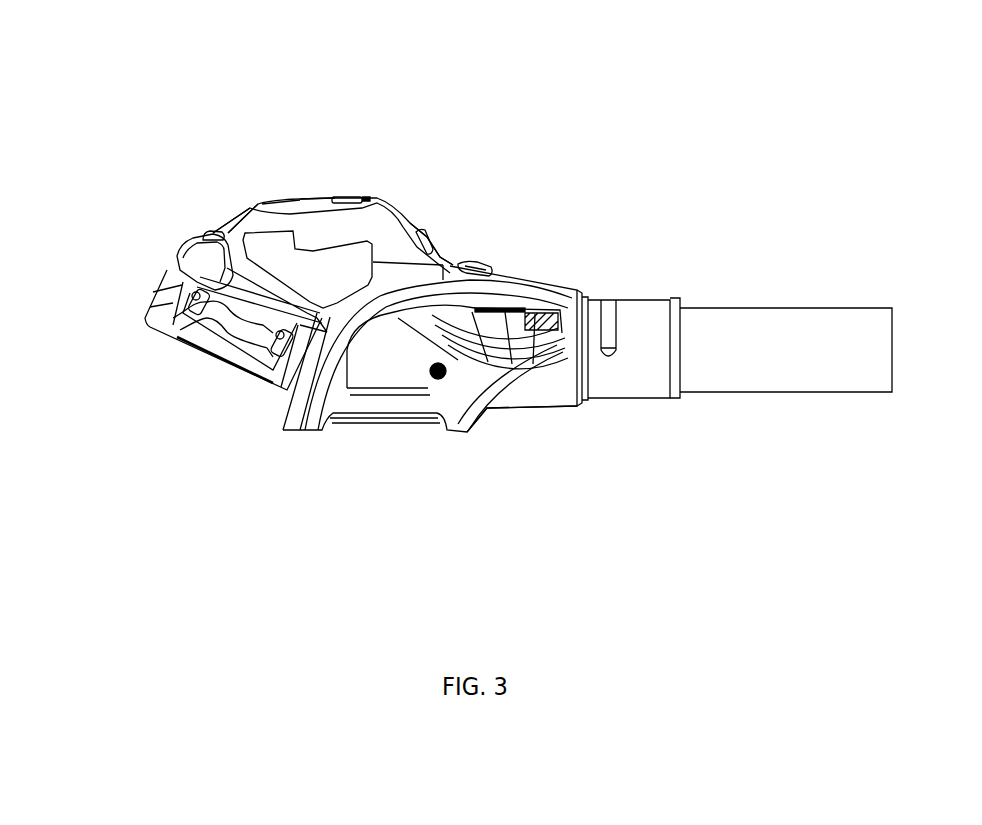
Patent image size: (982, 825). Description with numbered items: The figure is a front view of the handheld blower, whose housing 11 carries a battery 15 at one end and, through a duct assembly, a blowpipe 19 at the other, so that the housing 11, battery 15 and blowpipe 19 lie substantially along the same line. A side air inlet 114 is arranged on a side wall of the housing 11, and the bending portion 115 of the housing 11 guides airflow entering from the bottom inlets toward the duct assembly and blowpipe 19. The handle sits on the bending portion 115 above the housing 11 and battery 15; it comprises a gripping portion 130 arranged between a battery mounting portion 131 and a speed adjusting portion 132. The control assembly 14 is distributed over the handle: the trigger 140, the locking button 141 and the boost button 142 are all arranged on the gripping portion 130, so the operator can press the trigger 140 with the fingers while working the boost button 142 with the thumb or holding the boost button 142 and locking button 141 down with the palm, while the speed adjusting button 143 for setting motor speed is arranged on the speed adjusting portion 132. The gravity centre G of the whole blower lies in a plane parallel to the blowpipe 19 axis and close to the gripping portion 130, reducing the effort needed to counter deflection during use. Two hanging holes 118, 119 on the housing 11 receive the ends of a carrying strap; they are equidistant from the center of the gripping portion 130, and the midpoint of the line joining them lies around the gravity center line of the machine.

The housing 11 is at (433, 380).
The control assembly 14 is at (485, 78).
The battery 15 is at (225, 353).
The blowpipe 19 is at (832, 320).
The side air inlet 114 is at (530, 375).
The bending portion 115 is at (328, 412).
The hanging hole 118 is at (450, 278).
The hanging hole 119 is at (210, 232).
The gripping portion 130 is at (248, 200).
The battery mounting portion 131 is at (203, 263).
The speed adjusting portion 132 is at (430, 257).
The trigger 140 is at (316, 200).
The locking button 141 is at (277, 198).
The boost button 142 is at (352, 197).
The speed adjusting button 143 is at (430, 240).
The gravity centre G is at (445, 390).